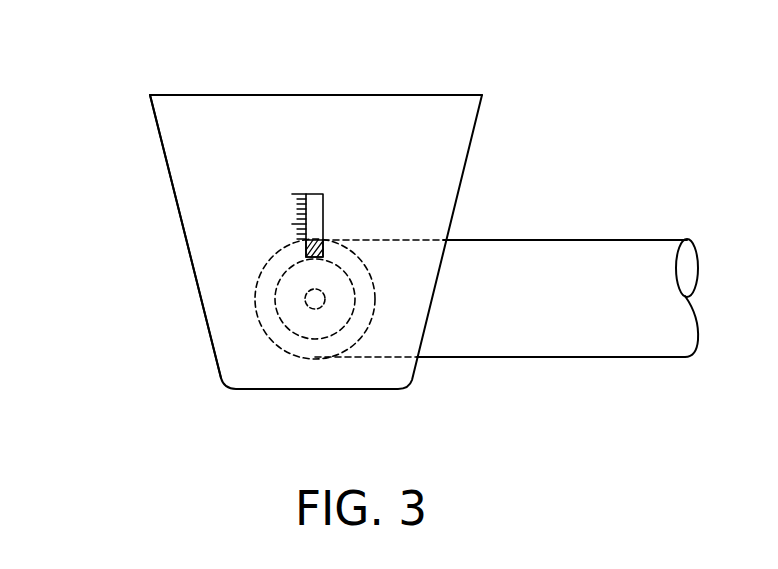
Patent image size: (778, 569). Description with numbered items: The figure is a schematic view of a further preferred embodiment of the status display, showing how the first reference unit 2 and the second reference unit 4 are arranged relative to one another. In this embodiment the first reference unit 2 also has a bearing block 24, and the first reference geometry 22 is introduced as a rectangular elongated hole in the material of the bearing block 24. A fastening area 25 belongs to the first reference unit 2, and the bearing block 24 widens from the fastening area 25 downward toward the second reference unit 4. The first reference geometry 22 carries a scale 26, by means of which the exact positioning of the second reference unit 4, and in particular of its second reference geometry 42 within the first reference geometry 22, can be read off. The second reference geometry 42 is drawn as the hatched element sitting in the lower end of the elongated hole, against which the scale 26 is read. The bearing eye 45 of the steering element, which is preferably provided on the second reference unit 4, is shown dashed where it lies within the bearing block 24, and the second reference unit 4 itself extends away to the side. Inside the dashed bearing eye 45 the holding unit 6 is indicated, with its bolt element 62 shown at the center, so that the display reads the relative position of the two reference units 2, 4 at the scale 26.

The first reference unit 2 is at (480, 113).
The second reference unit 4 is at (577, 357).
The holding unit 6 is at (286, 353).
The first reference geometry 22 is at (313, 205).
The bearing block 24 is at (213, 222).
The fastening area 25 is at (288, 95).
The scale 26 is at (286, 208).
The second reference geometry 42 is at (325, 237).
The bearing eye 45 is at (375, 311).
The bolt element 62 is at (305, 300).